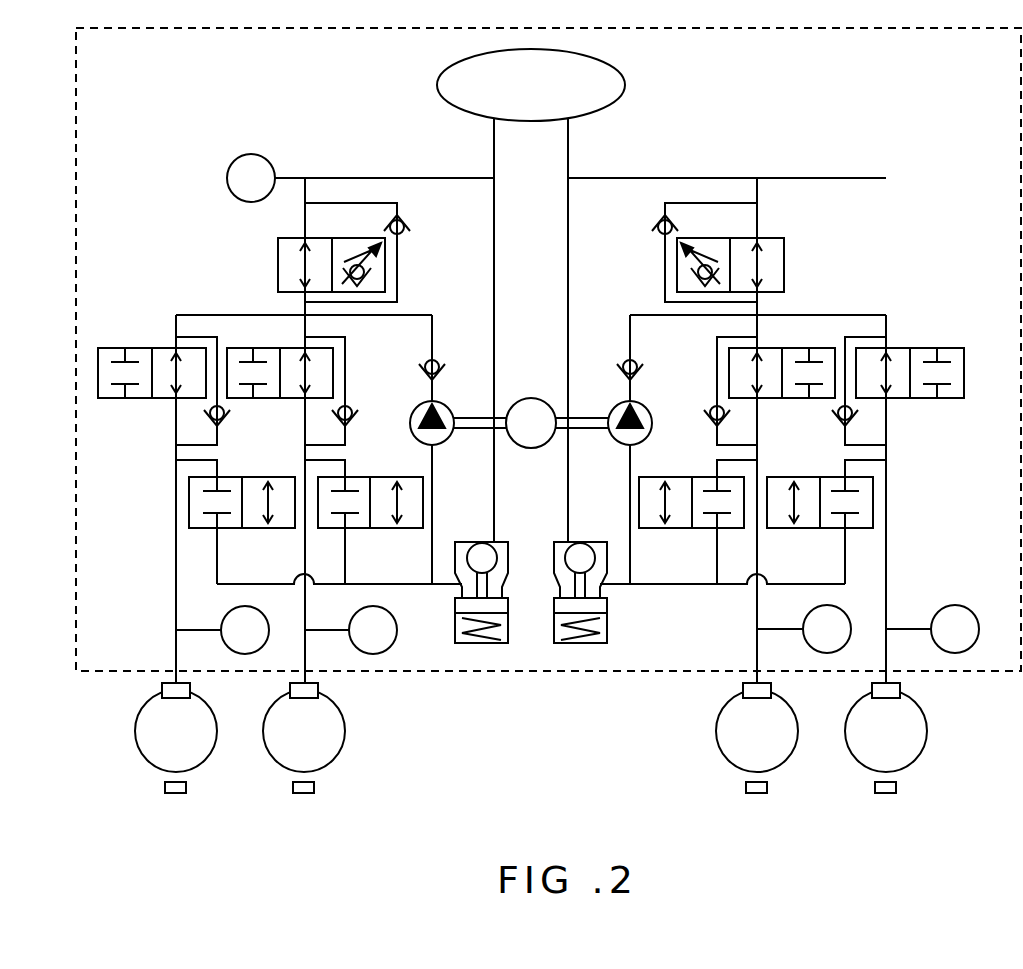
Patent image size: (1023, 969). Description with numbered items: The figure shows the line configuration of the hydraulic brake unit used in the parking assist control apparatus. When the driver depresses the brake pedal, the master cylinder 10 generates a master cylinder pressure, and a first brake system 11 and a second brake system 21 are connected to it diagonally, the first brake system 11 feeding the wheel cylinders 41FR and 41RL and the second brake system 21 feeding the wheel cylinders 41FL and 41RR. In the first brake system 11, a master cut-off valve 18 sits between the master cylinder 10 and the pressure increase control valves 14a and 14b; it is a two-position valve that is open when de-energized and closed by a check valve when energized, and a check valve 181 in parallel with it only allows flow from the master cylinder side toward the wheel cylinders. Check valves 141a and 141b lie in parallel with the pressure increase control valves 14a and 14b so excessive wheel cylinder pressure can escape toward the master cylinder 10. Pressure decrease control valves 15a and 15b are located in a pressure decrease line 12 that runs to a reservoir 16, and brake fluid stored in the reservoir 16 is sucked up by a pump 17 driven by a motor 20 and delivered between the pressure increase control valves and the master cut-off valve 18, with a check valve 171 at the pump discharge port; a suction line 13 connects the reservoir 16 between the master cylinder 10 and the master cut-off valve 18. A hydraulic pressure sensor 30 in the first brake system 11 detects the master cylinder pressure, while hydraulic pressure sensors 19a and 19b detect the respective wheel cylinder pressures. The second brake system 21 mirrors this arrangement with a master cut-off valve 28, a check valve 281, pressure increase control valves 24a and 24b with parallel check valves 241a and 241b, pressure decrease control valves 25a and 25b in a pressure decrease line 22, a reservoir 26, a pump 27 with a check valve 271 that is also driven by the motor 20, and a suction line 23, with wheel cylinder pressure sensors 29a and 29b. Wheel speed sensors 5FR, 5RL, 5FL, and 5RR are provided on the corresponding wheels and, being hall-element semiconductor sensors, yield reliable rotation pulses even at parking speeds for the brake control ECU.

The master cylinder 10 is at (625, 85).
The first brake system 11 is at (494, 152).
The second brake system 21 is at (568, 152).
The suction line 13 is at (494, 295).
The suction line 23 is at (568, 295).
The hydraulic pressure sensor 30 is at (251, 154).
The master cut-off valve 18 is at (278, 262).
The master cut-off valve 28 is at (785, 262).
The check valve 181 is at (405, 227).
The check valve 281 is at (658, 227).
The pressure increase control valve 14a is at (133, 347).
The pressure increase control valve 14b is at (262, 347).
The pressure increase control valve 24a is at (798, 347).
The pressure increase control valve 24b is at (924, 347).
The check valve 141a is at (207, 422).
The check valve 141b is at (352, 408).
The check valve 241a is at (710, 408).
The check valve 241b is at (855, 422).
The check valve 171 is at (424, 368).
The check valve 271 is at (638, 368).
The pressure decrease control valve 15a is at (255, 476).
The pressure decrease control valve 15b is at (379, 476).
The pressure decrease control valve 25a is at (804, 476).
The pressure decrease control valve 25b is at (676, 476).
The pressure decrease line 12 is at (255, 583).
The pressure decrease line 22 is at (671, 583).
The pump 17 is at (450, 440).
The pump 27 is at (612, 440).
The motor 20 is at (531, 448).
The reservoir 16 is at (455, 625).
The reservoir 26 is at (607, 625).
The hydraulic pressure sensor 19a is at (222, 623).
The hydraulic pressure sensor 19b is at (351, 623).
The W/C pressure sensor 29a is at (845, 612).
The W/C pressure sensor 29b is at (965, 610).
The wheel cylinder 41FR is at (162, 691).
The wheel cylinder 41RL is at (318, 690).
The wheel cylinder 41FL is at (743, 691).
The wheel cylinder 41RR is at (900, 690).
The wheel speed sensor 5FR is at (165, 788).
The wheel speed sensor 5RL is at (314, 788).
The wheel speed sensor 5FL is at (746, 788).
The wheel speed sensor 5RR is at (896, 788).